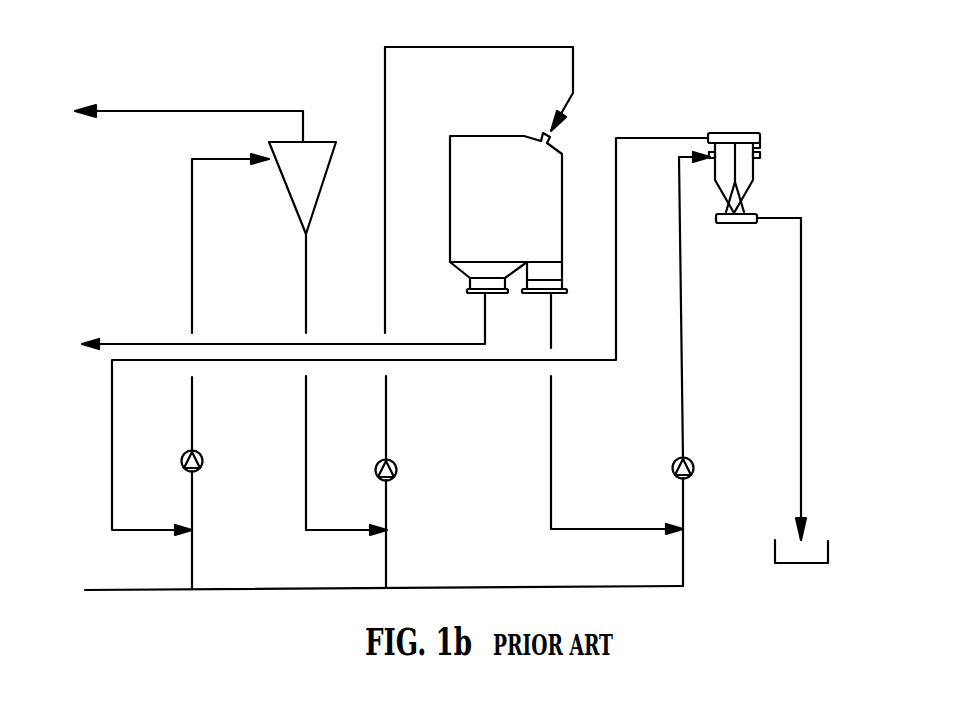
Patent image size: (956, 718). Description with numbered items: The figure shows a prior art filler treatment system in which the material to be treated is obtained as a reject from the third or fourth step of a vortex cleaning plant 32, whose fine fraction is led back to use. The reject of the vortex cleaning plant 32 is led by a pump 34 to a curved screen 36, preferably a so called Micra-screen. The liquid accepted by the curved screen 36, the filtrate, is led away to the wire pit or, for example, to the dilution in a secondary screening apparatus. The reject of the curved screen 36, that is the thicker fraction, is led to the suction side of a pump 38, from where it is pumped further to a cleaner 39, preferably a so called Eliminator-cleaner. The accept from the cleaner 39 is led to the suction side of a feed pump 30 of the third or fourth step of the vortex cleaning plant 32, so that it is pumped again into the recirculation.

The feed pump 30 is at (203, 467).
The vortex cleaning plant 32 is at (303, 184).
The pump 34 is at (398, 475).
The curved screen 36 is at (477, 177).
The pump 38 is at (697, 471).
The cleaner 39 is at (741, 167).